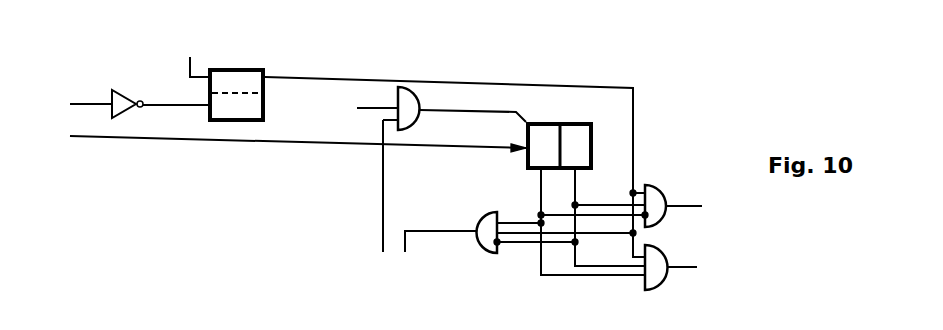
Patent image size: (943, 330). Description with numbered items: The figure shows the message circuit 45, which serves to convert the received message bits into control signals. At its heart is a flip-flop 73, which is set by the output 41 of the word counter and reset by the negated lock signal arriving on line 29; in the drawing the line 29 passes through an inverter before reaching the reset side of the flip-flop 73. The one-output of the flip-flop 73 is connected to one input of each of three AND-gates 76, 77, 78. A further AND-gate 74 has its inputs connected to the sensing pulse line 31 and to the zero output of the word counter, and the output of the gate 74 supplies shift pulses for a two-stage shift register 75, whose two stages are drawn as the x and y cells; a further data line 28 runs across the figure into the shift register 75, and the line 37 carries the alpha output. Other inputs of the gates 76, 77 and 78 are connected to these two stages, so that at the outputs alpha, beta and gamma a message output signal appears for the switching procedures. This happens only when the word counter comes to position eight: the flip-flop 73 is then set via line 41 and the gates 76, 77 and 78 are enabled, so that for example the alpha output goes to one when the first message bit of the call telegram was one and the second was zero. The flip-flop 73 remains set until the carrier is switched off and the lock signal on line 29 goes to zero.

The data line 28 is at (170, 138).
The lock signal line 29 is at (85, 102).
The sensing pulse line 31 is at (382, 176).
The output alpha line 37 is at (677, 203).
The output of the word counter 41 is at (194, 57).
The message circuit 45 is at (284, 187).
The flip-flop 73 is at (240, 68).
The AND-gate 74 is at (415, 90).
The two-stage shift register 75 is at (577, 122).
The AND-gate 76 is at (655, 184).
The AND-gate 77 is at (662, 253).
The AND-gate 78 is at (488, 256).